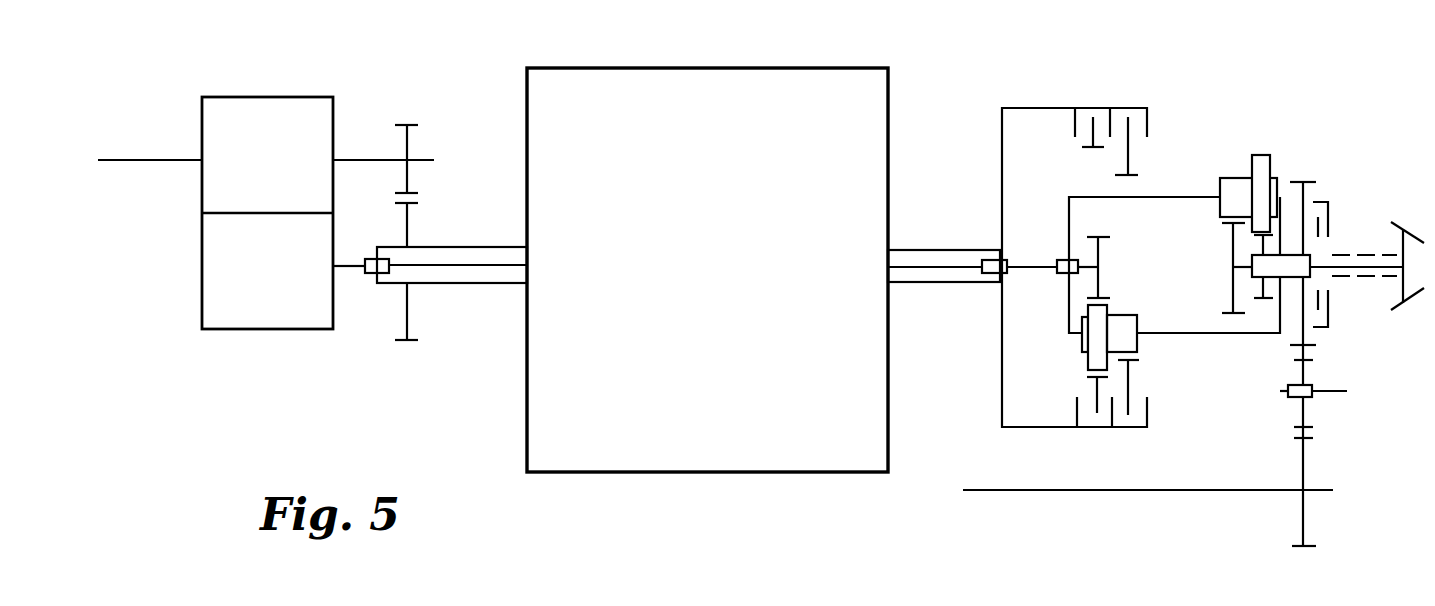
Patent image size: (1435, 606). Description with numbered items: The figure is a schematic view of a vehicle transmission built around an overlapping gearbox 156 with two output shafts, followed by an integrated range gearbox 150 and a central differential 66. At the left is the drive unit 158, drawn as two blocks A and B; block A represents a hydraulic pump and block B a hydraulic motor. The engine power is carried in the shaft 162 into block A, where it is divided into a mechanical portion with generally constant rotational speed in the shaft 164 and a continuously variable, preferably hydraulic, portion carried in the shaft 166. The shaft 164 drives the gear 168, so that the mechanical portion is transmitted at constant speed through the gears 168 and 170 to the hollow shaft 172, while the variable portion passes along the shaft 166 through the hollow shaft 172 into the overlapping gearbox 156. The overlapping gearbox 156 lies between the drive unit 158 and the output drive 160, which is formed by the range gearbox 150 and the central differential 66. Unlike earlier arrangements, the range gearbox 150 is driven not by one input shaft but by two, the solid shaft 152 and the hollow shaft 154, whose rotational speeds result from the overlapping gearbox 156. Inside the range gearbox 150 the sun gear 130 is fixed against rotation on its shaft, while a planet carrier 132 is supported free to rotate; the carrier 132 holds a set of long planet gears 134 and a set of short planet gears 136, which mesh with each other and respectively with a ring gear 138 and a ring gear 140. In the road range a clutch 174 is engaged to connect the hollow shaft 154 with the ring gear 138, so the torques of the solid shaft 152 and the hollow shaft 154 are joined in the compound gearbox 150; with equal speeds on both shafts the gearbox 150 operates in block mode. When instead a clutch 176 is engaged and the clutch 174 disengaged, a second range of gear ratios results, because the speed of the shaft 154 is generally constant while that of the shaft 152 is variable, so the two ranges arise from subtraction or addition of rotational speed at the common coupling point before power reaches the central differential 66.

The central differential 66 is at (1304, 141).
The sun gear 130 is at (1104, 250).
The planet carrier 132 is at (1197, 197).
The long planet gears 134 is at (1125, 341).
The short planet gears 136 is at (1095, 341).
The ring gear 138 is at (1128, 153).
The ring gear 140 is at (1093, 133).
The range gearbox 150 is at (1124, 76).
The solid input shaft 152 is at (930, 282).
The hollow input shaft 154 is at (915, 250).
The overlapping gearbox 156 is at (709, 279).
The drive unit 158 is at (255, 352).
The output drive 160 is at (1080, 500).
The engine shaft 162 is at (161, 160).
The mechanical shaft 164 is at (362, 160).
The variable shaft 166 is at (350, 267).
The gear 168 is at (407, 143).
The gear 170 is at (407, 311).
The hollow shaft 172 is at (506, 247).
The clutch 174 is at (1117, 427).
The clutch 176 is at (1087, 427).